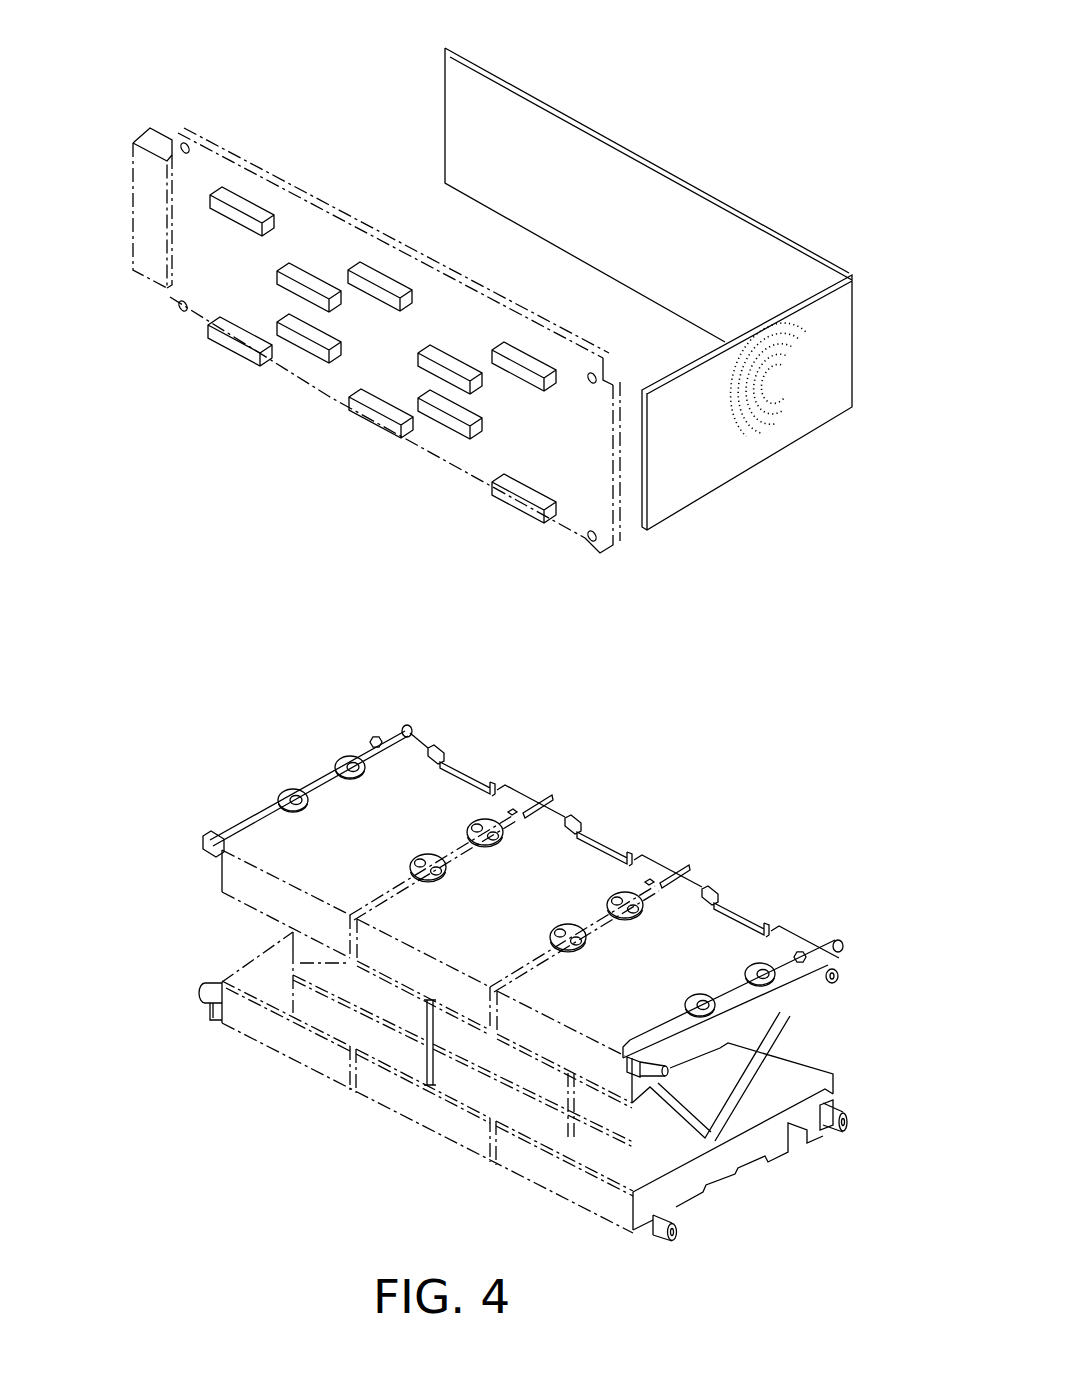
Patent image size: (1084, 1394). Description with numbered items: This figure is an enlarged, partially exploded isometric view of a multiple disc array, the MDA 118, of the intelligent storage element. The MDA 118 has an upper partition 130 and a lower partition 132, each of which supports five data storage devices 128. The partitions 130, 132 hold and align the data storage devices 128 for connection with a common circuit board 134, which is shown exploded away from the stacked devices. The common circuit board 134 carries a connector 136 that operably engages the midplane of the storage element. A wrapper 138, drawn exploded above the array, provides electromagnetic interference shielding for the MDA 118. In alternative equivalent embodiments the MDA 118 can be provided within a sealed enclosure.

The MDA 118 is at (716, 50).
The data storage devices 128 is at (325, 802).
The upper partition 130 is at (810, 997).
The lower partition 132 is at (833, 1090).
The common circuit board 134 is at (192, 138).
The connector 136 is at (147, 137).
The wrapper 138 is at (507, 82).